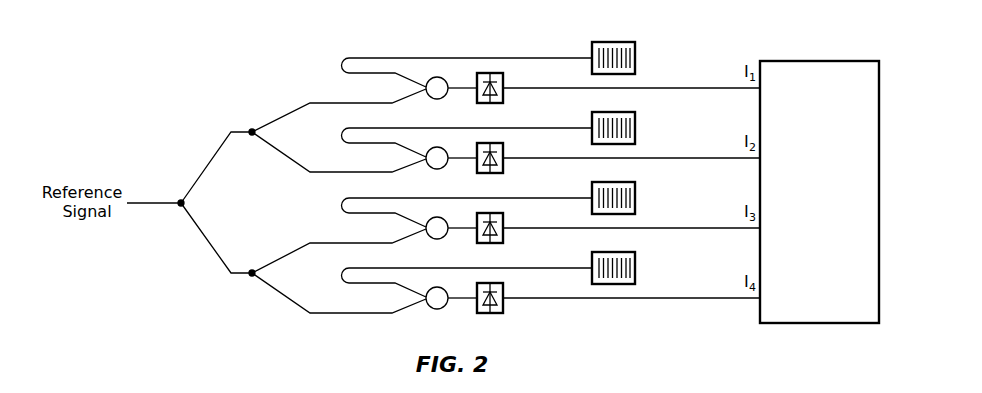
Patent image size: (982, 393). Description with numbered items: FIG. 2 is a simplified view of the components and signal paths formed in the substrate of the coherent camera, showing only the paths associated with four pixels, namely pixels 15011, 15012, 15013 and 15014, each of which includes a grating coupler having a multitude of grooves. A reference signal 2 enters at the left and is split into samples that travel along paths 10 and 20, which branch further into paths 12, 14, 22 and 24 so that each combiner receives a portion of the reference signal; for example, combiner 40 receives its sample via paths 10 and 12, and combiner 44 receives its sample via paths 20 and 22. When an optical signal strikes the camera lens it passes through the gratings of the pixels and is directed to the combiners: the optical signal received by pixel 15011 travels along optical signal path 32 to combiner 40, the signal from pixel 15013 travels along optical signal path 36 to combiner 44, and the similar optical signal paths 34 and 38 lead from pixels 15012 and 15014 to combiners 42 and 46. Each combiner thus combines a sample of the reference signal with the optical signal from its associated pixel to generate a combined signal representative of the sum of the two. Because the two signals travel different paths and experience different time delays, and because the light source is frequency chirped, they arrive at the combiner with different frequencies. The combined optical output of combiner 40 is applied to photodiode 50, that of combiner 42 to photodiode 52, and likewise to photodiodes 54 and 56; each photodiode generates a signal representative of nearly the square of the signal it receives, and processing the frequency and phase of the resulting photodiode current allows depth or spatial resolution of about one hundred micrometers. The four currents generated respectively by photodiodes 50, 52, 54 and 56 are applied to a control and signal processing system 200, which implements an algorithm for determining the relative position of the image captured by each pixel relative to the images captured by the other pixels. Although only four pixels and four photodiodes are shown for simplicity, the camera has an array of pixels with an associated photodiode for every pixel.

The reference signal input waveguide 2 is at (163, 201).
The path 10 is at (212, 158).
The path 20 is at (212, 248).
The path 12 is at (285, 113).
The waveguide branch 14 is at (285, 160).
The path 22 is at (285, 253).
The waveguide branch 24 is at (285, 301).
The optical signal path 32 is at (372, 58).
The sensing waveguide loop 34 is at (372, 128).
The optical signal path 36 is at (372, 198).
The sensing waveguide loop 38 is at (372, 268).
The combiner 40 is at (437, 99).
The combiner 42 is at (437, 169).
The combiner 44 is at (437, 239).
The optical coupler 46 is at (437, 309).
The photodiode 50 is at (503, 82).
The photodiode 52 is at (503, 152).
The photodiode 54 is at (503, 222).
The photodiode 56 is at (503, 292).
The pixel 15011 is at (635, 56).
The pixel 15012 is at (635, 126).
The pixel 15013 is at (635, 196).
The pixel 15014 is at (635, 266).
The control and signal processing system 200 is at (818, 61).